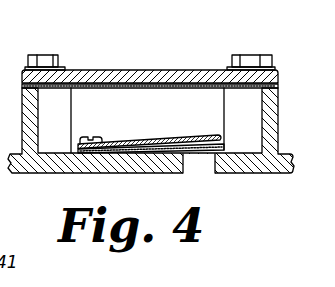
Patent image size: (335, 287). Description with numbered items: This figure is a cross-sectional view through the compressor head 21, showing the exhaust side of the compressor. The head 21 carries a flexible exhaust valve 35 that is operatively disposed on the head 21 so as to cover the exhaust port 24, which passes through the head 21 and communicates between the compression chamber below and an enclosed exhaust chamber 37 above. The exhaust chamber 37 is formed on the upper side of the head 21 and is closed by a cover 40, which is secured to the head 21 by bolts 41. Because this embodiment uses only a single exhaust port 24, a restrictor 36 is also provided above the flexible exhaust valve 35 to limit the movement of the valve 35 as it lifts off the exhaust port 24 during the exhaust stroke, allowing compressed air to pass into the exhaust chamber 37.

The head 21 is at (266, 157).
The exhaust port 24 is at (203, 166).
The flexible exhaust valve 35 is at (222, 145).
The restrictor 36 is at (192, 134).
The exhaust chamber 37 is at (108, 103).
The cover 40 is at (185, 75).
The bolts 41 is at (54, 40).